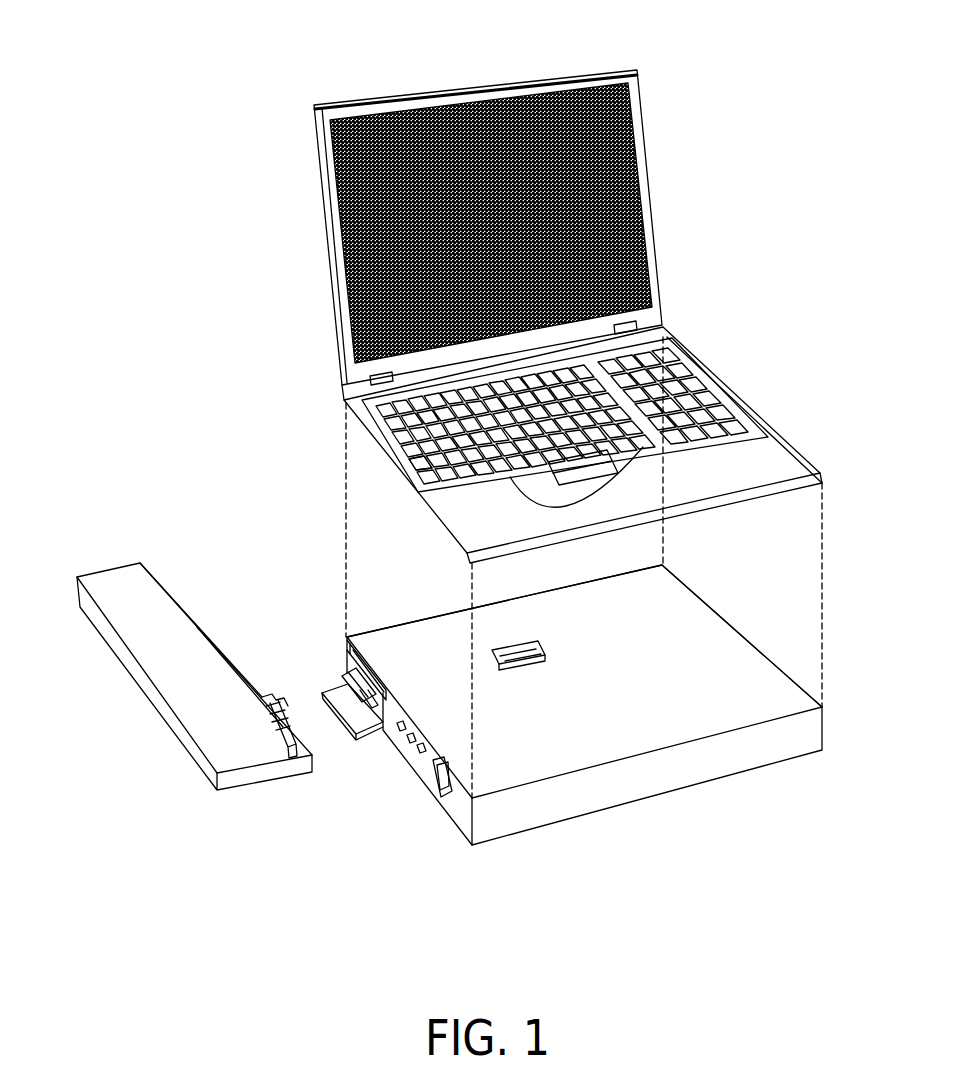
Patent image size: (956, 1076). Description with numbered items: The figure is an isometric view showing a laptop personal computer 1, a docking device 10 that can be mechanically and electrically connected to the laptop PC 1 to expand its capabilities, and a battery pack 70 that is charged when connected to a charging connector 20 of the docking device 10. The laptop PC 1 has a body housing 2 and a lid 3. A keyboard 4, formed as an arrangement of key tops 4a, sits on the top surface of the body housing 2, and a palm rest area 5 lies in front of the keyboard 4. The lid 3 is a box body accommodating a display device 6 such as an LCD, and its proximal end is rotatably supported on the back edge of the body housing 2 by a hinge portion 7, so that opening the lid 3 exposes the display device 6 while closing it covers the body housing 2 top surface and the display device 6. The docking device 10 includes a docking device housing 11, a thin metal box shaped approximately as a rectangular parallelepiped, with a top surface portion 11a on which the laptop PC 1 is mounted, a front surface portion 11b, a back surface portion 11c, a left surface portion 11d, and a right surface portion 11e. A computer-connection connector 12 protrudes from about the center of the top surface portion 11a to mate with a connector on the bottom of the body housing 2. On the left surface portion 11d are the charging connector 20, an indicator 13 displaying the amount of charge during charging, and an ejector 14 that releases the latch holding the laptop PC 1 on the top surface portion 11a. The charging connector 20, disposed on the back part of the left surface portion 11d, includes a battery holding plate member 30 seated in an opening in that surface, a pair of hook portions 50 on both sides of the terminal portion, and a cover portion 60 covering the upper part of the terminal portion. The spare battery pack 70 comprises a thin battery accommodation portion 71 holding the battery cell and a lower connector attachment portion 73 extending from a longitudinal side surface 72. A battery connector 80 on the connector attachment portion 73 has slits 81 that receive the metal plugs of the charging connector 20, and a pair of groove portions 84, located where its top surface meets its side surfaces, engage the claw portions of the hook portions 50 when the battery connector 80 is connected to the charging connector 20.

The laptop personal computer 1 is at (665, 78).
The body housing 2 is at (322, 465).
The lid 3 is at (296, 160).
The keyboard 4 is at (420, 480).
The key tops 4a is at (407, 462).
The palm rest area 5 is at (453, 507).
The display device 6 is at (485, 128).
The hinge portion 7 is at (377, 362).
The docking device 10 is at (680, 797).
The docking device housing 11 is at (613, 775).
The top surface portion 11a is at (673, 623).
The front surface portion 11b is at (750, 747).
The back surface portion 11c is at (530, 590).
The left surface portion 11d is at (460, 798).
The right surface portion 11e is at (750, 640).
The computer-connection connector 12 is at (517, 637).
The indicator 13 is at (412, 735).
The ejector 14 is at (437, 762).
The charging connector 20 is at (390, 748).
The battery holding plate member 30 is at (363, 742).
The hook portions 50 is at (340, 673).
The cover portion 60 is at (375, 658).
The battery pack 70 is at (100, 673).
The battery accommodation portion 71 is at (187, 687).
The longitudinal side surface 72 is at (207, 633).
The connector attachment portion 73 is at (222, 657).
The battery connector 80 is at (290, 677).
The slits 81 is at (275, 707).
The groove portions 84 is at (283, 732).